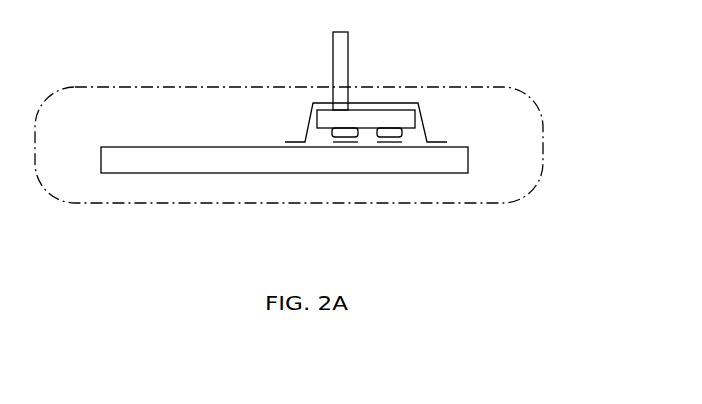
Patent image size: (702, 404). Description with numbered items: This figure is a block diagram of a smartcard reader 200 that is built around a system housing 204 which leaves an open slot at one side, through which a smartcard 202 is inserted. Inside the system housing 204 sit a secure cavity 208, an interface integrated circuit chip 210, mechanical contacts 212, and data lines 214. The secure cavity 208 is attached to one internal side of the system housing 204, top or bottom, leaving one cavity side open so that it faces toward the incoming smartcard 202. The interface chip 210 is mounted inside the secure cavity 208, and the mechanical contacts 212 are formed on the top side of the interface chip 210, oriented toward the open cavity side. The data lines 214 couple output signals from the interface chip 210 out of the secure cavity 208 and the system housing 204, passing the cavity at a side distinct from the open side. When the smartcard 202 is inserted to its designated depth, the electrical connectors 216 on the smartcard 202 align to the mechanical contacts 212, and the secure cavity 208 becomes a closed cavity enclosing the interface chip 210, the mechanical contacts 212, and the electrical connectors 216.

The smartcard reader 200 is at (306, 245).
The smartcard 202 is at (101, 148).
The system housing 204 is at (537, 101).
The secure cavity 208 is at (428, 128).
The interface integrated circuit chip 210 is at (378, 117).
The mechanical contacts 212 is at (332, 143).
The data lines 214 is at (349, 33).
The electrical connectors 216 is at (394, 144).